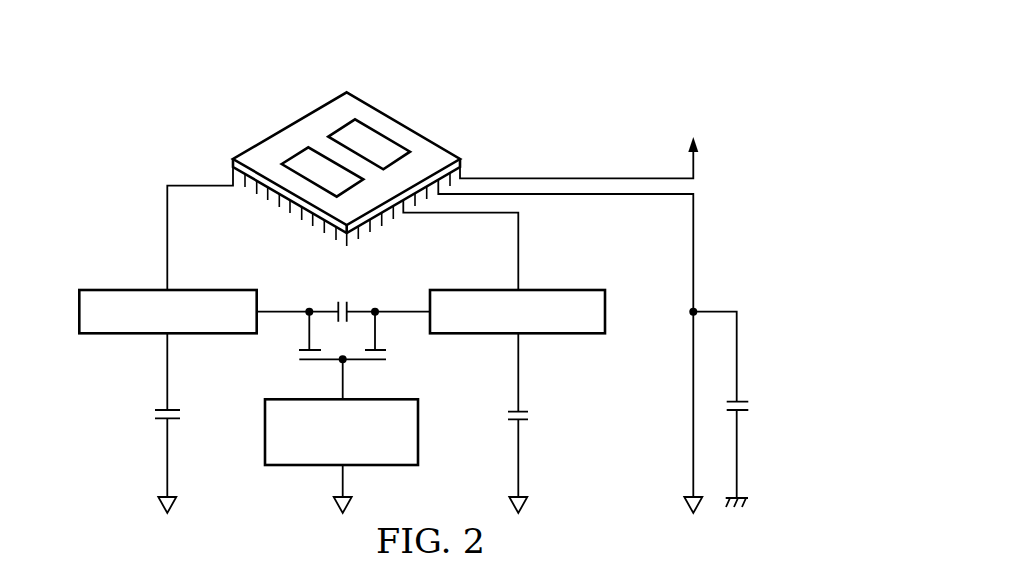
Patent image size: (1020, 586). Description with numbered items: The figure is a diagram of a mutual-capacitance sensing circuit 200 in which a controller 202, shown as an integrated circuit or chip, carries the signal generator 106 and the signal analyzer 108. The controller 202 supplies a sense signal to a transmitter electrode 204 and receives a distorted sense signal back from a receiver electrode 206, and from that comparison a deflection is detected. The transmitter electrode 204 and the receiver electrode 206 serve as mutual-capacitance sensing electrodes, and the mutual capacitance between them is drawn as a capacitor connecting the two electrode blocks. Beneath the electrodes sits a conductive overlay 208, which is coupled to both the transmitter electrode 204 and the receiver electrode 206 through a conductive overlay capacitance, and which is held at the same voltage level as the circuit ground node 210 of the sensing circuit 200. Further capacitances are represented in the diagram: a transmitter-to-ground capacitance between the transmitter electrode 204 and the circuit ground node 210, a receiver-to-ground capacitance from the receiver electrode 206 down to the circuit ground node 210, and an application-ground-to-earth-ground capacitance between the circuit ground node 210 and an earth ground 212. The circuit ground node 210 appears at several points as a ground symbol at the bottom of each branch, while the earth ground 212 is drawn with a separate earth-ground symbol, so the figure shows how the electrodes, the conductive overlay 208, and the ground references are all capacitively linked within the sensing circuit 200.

The mutual-capacitance sensing circuit 200 is at (162, 76).
The controller 202 is at (332, 117).
The signal generator 106 is at (303, 162).
The signal analyzer 108 is at (373, 143).
The transmitter electrode 204 is at (79, 322).
The receiver electrode 206 is at (605, 322).
The conductive overlay 208 is at (265, 432).
The circuit ground node 210 is at (160, 502).
The earth ground 212 is at (747, 503).